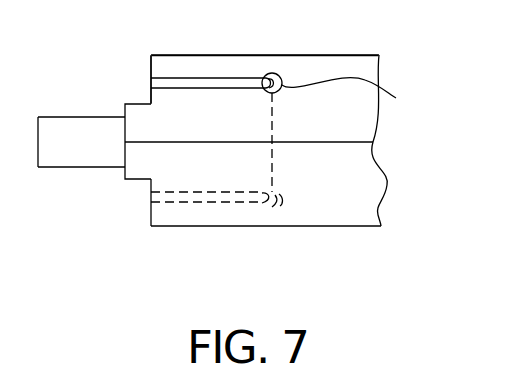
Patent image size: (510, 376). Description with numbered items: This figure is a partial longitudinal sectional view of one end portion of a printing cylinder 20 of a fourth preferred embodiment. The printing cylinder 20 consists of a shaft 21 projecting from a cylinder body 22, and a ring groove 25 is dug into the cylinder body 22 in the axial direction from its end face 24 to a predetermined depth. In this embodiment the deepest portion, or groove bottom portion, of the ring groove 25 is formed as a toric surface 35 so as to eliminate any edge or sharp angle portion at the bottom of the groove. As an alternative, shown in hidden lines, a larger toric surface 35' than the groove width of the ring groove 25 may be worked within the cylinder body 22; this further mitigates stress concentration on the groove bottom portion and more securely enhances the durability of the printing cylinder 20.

The printing cylinder 20 is at (347, 230).
The shaft 21 is at (137, 103).
The cylinder body 22 is at (357, 65).
The end face 24 is at (150, 64).
The ring groove 25 is at (212, 86).
The toric surface 35 is at (288, 55).
The larger toric surface 35' is at (355, 97).